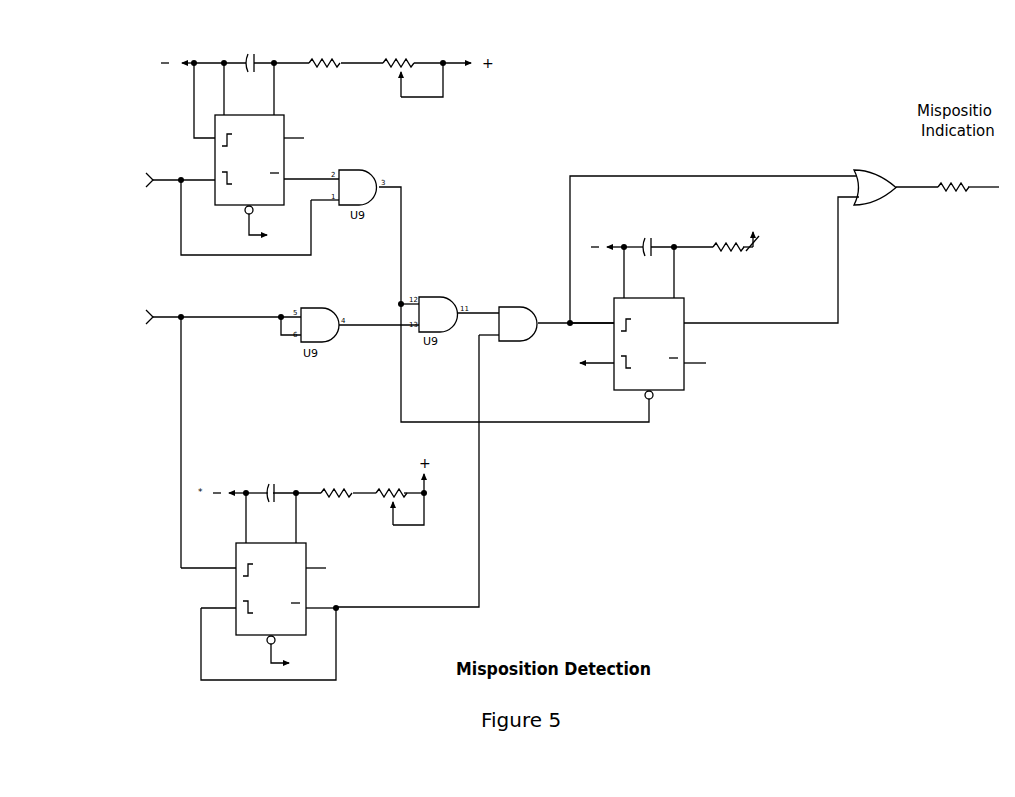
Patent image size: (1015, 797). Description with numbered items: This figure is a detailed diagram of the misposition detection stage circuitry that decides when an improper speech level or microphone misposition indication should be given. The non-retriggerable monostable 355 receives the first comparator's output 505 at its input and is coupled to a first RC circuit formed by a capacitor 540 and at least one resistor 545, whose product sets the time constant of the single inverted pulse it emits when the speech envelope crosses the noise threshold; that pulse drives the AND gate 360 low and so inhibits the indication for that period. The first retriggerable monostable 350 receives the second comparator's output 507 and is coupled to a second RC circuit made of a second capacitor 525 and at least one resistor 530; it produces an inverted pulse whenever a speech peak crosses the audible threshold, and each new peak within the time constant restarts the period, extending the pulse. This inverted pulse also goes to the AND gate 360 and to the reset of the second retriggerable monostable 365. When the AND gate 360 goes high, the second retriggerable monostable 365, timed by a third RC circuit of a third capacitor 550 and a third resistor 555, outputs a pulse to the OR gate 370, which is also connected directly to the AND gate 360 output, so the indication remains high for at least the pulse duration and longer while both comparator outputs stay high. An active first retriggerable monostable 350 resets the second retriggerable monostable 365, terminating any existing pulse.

The first comparator's output 505 is at (140, 308).
The second comparator's output 507 is at (141, 182).
The second capacitor 525 is at (248, 50).
The resistor 530 is at (328, 50).
The first retriggerable monostable 350 is at (286, 119).
The non-retriggerable monostable 355 is at (305, 555).
The AND gate 360 is at (504, 305).
The second retriggerable monostable 365 is at (683, 299).
The OR gate 370 is at (870, 167).
The capacitor 540 is at (266, 481).
The resistor 545 is at (330, 481).
The third capacitor 550 is at (645, 238).
The third resistor 555 is at (757, 239).